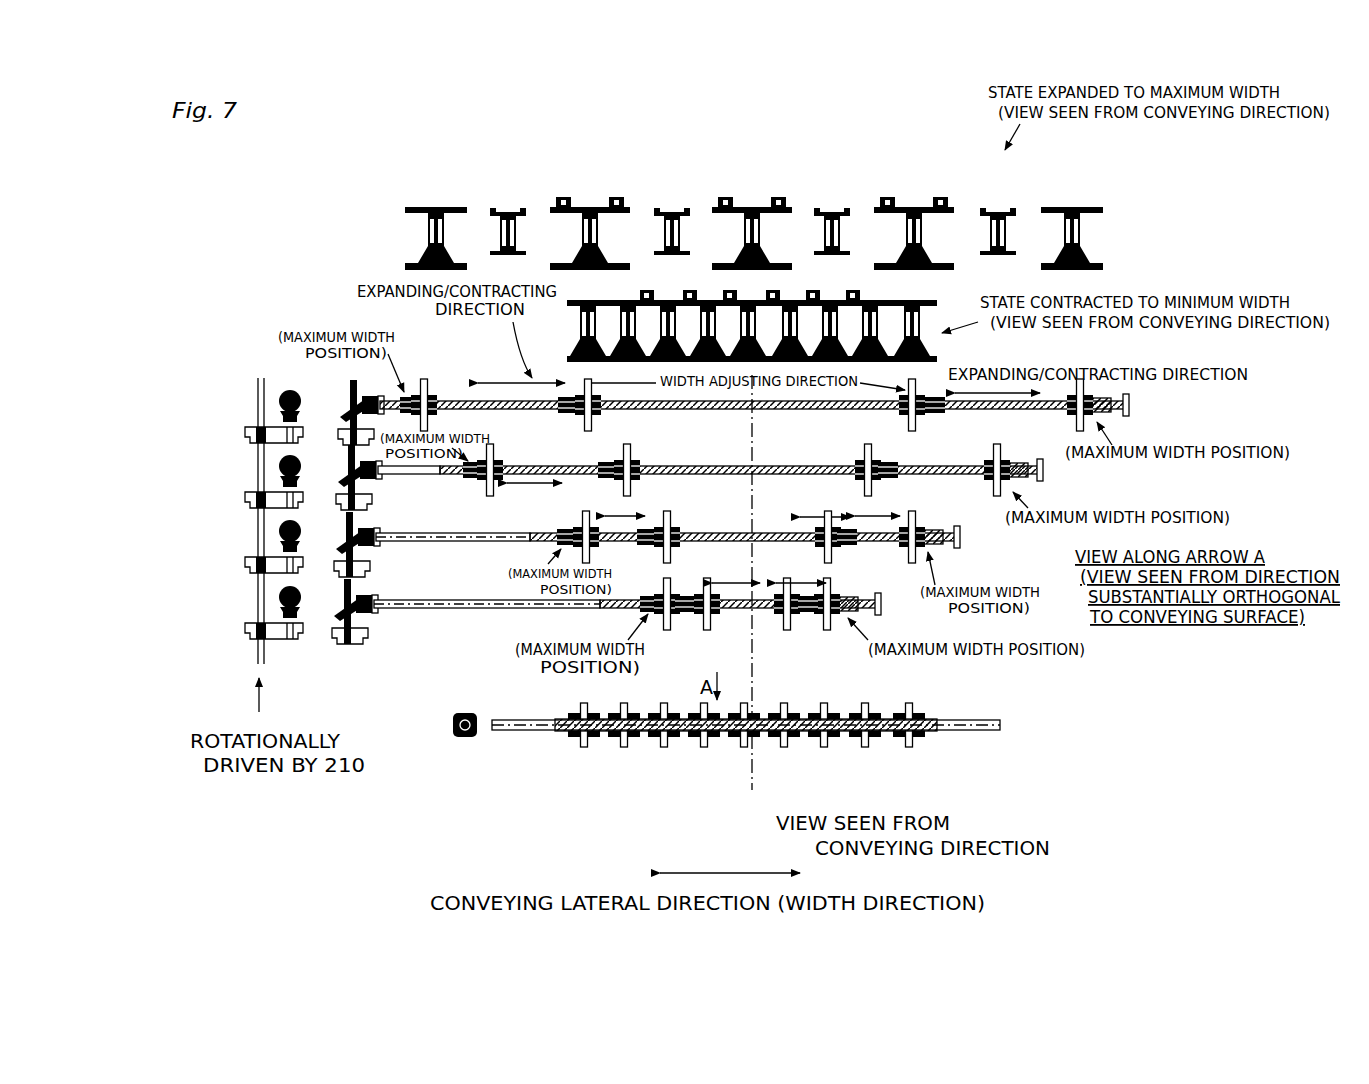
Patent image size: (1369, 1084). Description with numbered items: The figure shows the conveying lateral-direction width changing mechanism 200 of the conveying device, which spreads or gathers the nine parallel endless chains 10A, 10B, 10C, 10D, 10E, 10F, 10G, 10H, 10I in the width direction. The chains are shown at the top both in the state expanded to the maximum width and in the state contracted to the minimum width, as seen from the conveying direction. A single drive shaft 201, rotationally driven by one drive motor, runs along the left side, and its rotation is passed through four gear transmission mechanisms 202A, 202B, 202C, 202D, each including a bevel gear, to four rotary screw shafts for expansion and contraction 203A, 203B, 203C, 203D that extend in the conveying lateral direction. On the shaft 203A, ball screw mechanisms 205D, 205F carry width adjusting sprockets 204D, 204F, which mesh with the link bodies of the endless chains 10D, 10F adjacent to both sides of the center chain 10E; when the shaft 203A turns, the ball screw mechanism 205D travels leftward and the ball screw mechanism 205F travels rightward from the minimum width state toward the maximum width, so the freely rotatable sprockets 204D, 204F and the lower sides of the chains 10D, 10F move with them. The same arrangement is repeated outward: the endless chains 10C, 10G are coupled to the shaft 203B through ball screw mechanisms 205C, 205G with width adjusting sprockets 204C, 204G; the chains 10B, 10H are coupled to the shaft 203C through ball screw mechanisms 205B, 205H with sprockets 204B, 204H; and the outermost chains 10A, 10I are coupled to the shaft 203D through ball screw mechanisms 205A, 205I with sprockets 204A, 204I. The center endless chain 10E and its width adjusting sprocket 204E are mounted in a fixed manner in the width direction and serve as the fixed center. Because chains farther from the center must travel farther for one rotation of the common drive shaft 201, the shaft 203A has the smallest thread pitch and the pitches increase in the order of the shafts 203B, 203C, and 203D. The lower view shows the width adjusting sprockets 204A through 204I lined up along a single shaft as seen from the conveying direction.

The conveying lateral-direction width changing mechanism 200 is at (1058, 803).
The drive shaft 201 is at (252, 652).
The gear transmission mechanism 202A is at (262, 612).
The gear transmission mechanism 202B is at (270, 540).
The gear transmission mechanism 202C is at (272, 472).
The gear transmission mechanism 202D is at (272, 388).
The rotary screw shaft for expansion and contraction 203A is at (457, 618).
The rotary screw shaft for expansion and contraction 203B is at (438, 548).
The rotary screw shaft for expansion and contraction 203C is at (413, 478).
The rotary screw shaft for expansion and contraction 203D is at (470, 394).
The width adjusting sprocket 204A is at (595, 418).
The width adjusting sprocket 204B is at (637, 485).
The width adjusting sprocket 204C is at (673, 551).
The width adjusting sprocket 204D is at (711, 620).
The width adjusting sprocket 204E is at (752, 712).
The width adjusting sprocket 204F is at (785, 620).
The width adjusting sprocket 204G is at (822, 549).
The width adjusting sprocket 204H is at (864, 484).
The width adjusting sprocket 204I is at (917, 418).
The ball screw mechanism 205A is at (578, 415).
The ball screw mechanism 205B is at (613, 481).
The ball screw mechanism 205C is at (652, 549).
The ball screw mechanism 205D is at (690, 618).
The ball screw mechanism 205F is at (830, 620).
The ball screw mechanism 205G is at (851, 549).
The ball screw mechanism 205H is at (880, 485).
The ball screw mechanism 205I is at (930, 420).
The endless chain 10A is at (432, 203).
The endless chain 10B is at (512, 210).
The endless chain 10C is at (592, 204).
The endless chain 10D is at (672, 208).
The endless chain 10E is at (752, 292).
The endless chain 10F is at (830, 210).
The endless chain 10G is at (910, 207).
The endless chain 10H is at (998, 212).
The endless chain 10I is at (1083, 206).